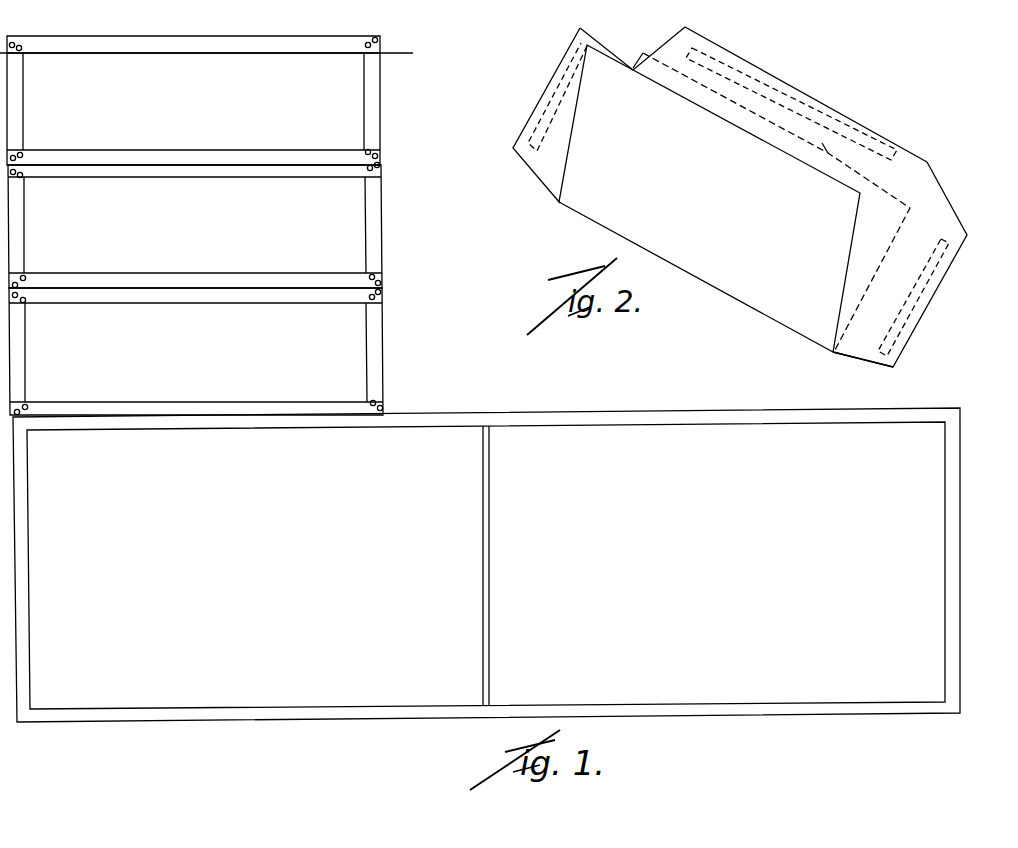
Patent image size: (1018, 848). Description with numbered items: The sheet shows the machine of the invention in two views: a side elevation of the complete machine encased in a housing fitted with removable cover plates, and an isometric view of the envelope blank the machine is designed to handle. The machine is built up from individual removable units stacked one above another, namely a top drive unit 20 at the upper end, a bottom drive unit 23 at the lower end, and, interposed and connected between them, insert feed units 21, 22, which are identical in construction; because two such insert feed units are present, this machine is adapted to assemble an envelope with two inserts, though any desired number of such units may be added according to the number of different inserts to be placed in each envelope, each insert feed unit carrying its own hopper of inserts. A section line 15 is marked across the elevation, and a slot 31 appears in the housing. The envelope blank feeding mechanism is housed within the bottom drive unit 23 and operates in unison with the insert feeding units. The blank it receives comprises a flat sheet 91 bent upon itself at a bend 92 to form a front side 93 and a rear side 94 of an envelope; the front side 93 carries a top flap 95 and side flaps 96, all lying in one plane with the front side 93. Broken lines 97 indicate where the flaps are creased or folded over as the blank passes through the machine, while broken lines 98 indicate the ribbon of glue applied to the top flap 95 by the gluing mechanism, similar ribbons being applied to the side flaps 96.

In FIG. 1, the section line 15 is at (402, 38).
In FIG. 1, the top drive unit 20 is at (378, 113).
In FIG. 1, the insert feed unit 21 is at (379, 205).
In FIG. 1, the insert feed unit 22 is at (381, 338).
In FIG. 1, the bottom drive unit 23 is at (467, 417).
In FIG. 2, the slot 31 is at (687, 87).
In FIG. 2, the flat sheet 91 is at (873, 230).
In FIG. 2, the bend 92 is at (811, 345).
In FIG. 2, the front side 93 is at (873, 253).
In FIG. 2, the rear side 94 is at (802, 275).
In FIG. 2, the top flap 95 is at (883, 137).
In FIG. 2, the side flaps 96 is at (543, 110).
In FIG. 2, the broken lines 97 is at (643, 53).
In FIG. 2, the broken lines 98 is at (748, 72).